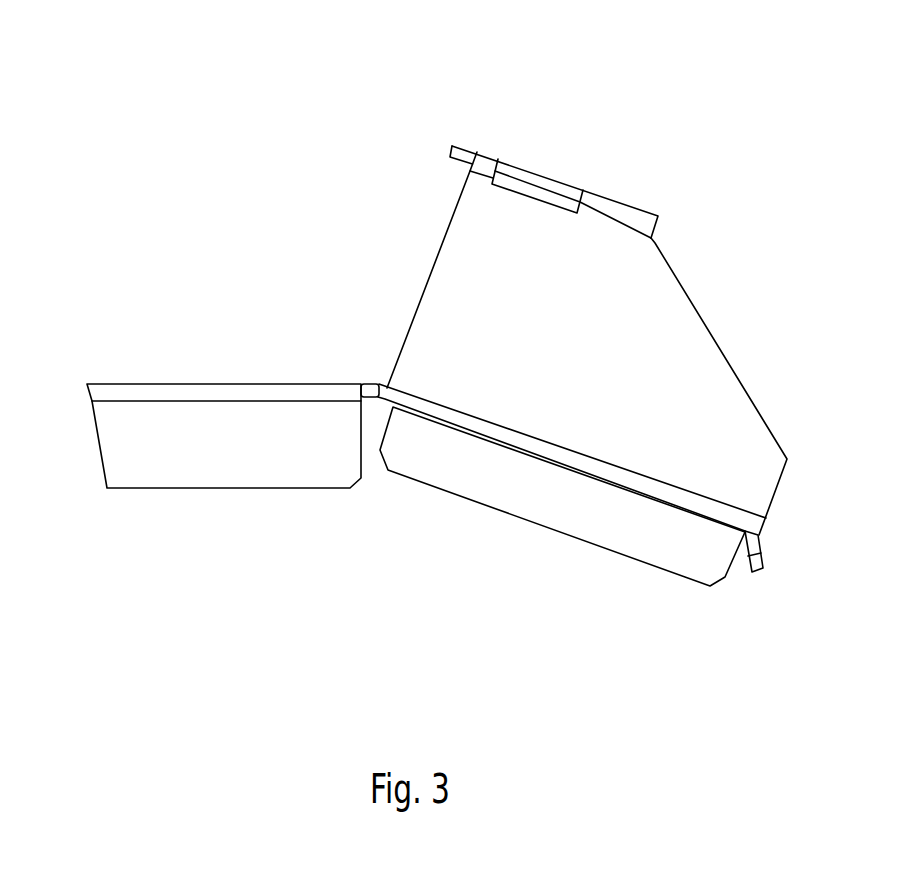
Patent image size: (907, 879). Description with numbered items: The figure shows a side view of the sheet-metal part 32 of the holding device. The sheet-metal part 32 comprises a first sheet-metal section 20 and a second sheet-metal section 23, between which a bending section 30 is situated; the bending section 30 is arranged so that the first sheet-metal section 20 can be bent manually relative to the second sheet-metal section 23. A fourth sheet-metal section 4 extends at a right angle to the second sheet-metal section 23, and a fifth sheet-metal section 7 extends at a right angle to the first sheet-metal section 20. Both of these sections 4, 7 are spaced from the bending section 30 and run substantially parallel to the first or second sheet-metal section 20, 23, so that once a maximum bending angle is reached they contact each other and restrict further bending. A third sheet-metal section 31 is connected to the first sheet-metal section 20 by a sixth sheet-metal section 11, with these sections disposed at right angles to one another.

The fourth sheet-metal section 4 is at (197, 489).
The fifth sheet-metal section 7 is at (606, 549).
The sixth sheet-metal section 11 is at (673, 388).
The first sheet-metal section 20 is at (507, 447).
The second sheet-metal section 23 is at (135, 383).
The bending section 30 is at (375, 383).
The third sheet-metal section 31 is at (491, 150).
The sheet-metal part 32 is at (691, 185).